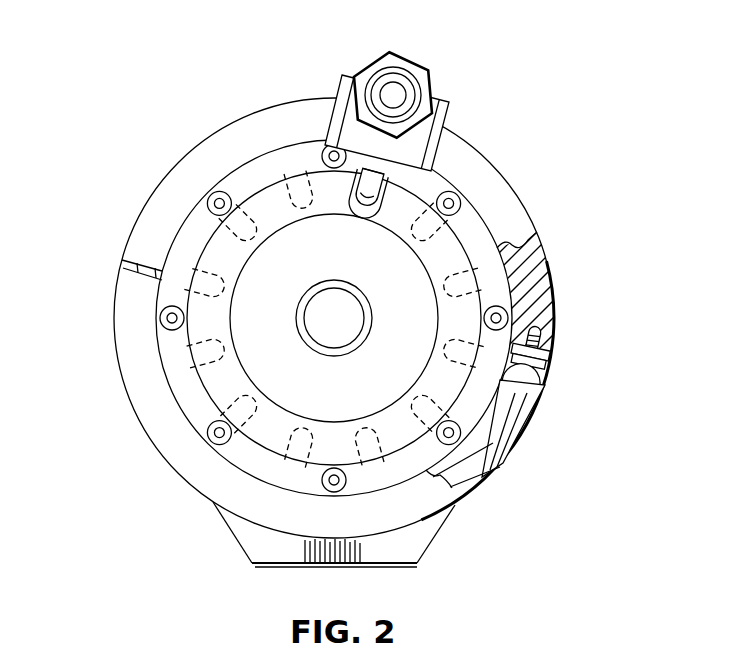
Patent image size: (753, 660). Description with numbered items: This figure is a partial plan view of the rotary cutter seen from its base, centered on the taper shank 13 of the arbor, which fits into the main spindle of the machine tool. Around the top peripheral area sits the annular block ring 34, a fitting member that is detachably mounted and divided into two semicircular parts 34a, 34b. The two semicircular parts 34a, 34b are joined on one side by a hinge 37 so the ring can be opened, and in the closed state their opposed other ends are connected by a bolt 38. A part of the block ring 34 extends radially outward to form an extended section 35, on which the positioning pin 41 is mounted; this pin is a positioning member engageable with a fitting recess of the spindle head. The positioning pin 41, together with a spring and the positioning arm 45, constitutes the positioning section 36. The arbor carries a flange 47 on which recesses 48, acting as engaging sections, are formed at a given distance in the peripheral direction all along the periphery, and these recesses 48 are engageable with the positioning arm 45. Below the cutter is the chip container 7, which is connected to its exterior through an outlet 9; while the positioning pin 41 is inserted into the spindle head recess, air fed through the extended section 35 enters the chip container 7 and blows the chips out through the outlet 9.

The chip container 7 is at (432, 512).
The outlet 9 is at (382, 568).
The taper shank 13 is at (398, 378).
The block ring 34 is at (641, 257).
The semicircular part 34a is at (553, 289).
The semicircular part 34b is at (540, 398).
The extended section 35 is at (448, 98).
The positioning section 36 is at (429, 72).
The hinge 37 is at (143, 276).
The bolt 38 is at (500, 401).
The positioning pin 41 is at (381, 84).
The positioning arm 45 is at (430, 172).
The flange 47 is at (464, 250).
The recesses 48 is at (370, 192).